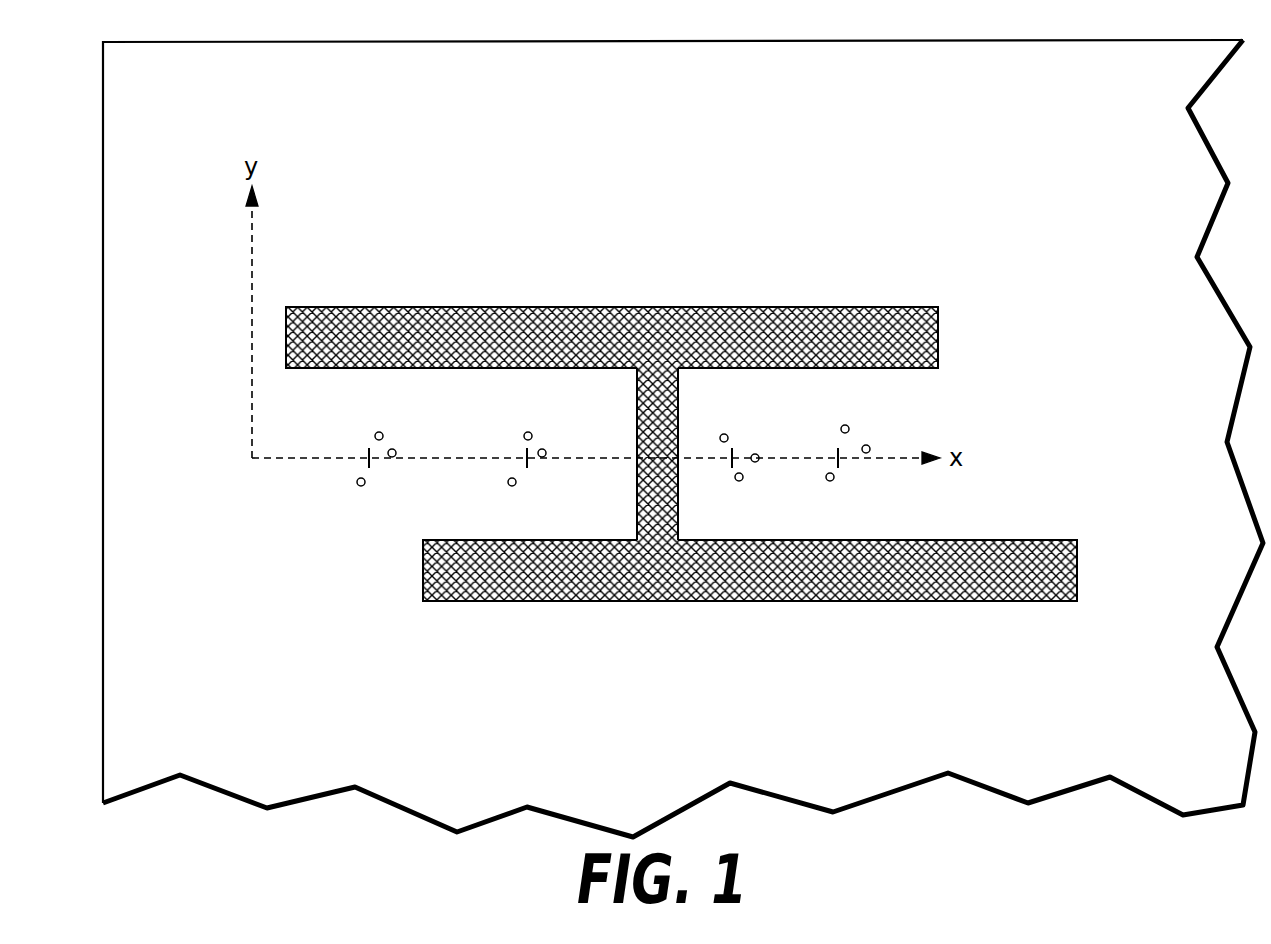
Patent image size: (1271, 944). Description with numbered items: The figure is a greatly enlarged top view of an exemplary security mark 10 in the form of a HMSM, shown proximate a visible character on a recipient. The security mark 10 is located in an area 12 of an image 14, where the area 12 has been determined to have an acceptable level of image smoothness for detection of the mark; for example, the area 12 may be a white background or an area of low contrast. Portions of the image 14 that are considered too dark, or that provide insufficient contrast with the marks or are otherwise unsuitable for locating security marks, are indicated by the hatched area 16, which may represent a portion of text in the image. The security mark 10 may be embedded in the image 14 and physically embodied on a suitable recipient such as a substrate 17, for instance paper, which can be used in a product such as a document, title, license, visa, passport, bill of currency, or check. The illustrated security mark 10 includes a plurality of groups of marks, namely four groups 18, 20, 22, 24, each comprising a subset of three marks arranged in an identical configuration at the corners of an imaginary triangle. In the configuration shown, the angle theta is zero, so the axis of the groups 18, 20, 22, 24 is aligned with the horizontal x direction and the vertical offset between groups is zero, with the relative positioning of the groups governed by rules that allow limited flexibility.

The security mark 10 is at (860, 430).
The area 12 is at (982, 498).
The image 14 is at (925, 285).
The hatched area 16 is at (682, 305).
The substrate 17 is at (500, 48).
The first group of marks 18 is at (382, 481).
The second group of marks 20 is at (540, 481).
The third group of marks 22 is at (757, 482).
The fourth group of marks 24 is at (850, 482).